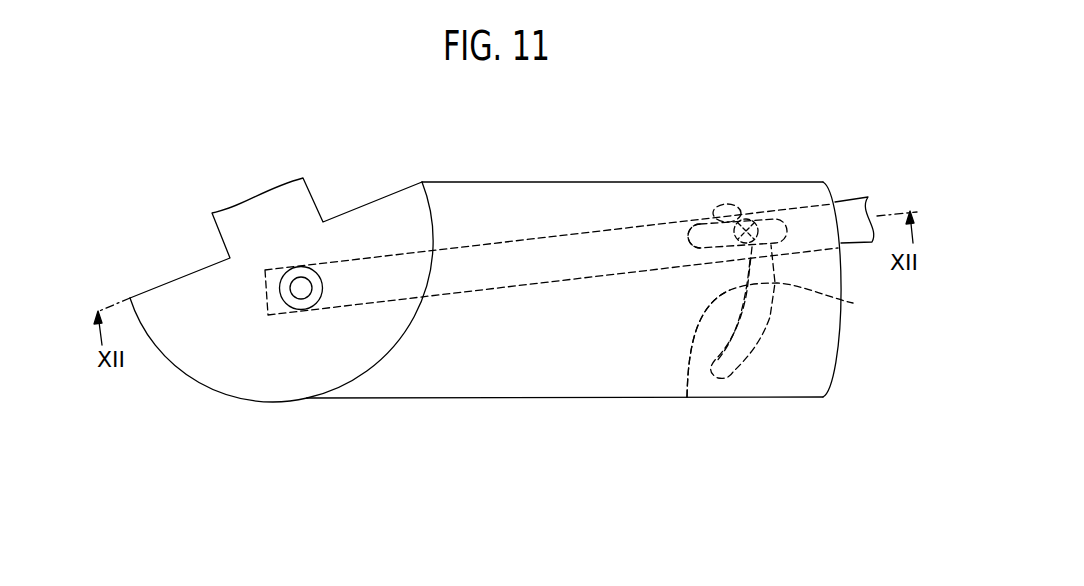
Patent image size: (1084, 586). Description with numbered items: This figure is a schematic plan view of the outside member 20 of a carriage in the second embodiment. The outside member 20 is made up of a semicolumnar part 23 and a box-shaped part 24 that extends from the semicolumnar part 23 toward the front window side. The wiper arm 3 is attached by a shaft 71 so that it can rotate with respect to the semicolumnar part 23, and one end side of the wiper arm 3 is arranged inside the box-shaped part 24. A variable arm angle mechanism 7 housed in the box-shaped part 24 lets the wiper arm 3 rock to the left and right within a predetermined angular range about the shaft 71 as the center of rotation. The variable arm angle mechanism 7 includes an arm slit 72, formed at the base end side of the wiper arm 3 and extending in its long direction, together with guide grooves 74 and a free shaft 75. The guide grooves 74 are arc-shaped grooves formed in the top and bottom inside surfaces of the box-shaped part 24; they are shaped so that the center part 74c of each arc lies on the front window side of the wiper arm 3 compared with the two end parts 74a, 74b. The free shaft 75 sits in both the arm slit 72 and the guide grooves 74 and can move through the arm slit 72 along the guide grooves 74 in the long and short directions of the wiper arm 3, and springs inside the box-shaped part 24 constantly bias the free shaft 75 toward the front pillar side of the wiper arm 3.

The wiper arm 3 is at (853, 207).
The variable arm angle mechanism 7 is at (780, 274).
The outside member 20 is at (485, 347).
The semicolumnar part 23 is at (282, 360).
The box-shaped part 24 is at (348, 390).
The shaft 71 is at (302, 268).
The arm slit 72 is at (697, 247).
The guide grooves 74 is at (853, 303).
The end part of the arc 74a is at (717, 203).
The end part of the arc 74b is at (735, 375).
The center part of the arc 74c is at (687, 397).
The free shaft 75 is at (739, 204).